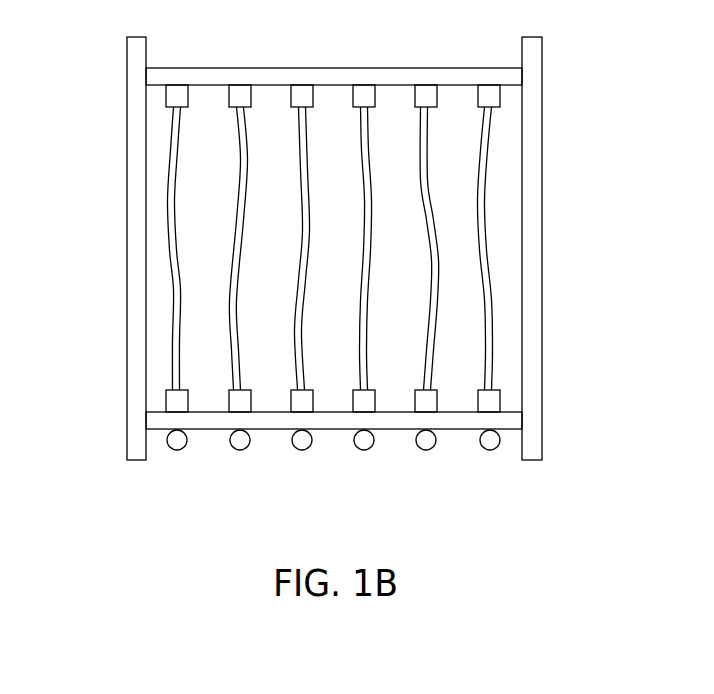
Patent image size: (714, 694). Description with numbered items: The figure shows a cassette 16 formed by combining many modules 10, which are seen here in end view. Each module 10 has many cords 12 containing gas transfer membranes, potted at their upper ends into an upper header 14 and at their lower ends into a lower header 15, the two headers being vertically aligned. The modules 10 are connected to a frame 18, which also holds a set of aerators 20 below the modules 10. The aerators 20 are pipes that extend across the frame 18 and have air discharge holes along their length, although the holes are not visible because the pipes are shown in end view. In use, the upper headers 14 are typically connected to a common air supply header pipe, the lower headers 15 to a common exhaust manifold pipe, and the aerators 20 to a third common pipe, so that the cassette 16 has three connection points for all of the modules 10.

The module 10 is at (380, 246).
The cords 12 is at (487, 145).
The upper header 14 is at (500, 97).
The lower header 15 is at (500, 400).
The cassette 16 is at (102, 232).
The frame 18 is at (544, 192).
The aerators 20 is at (493, 450).